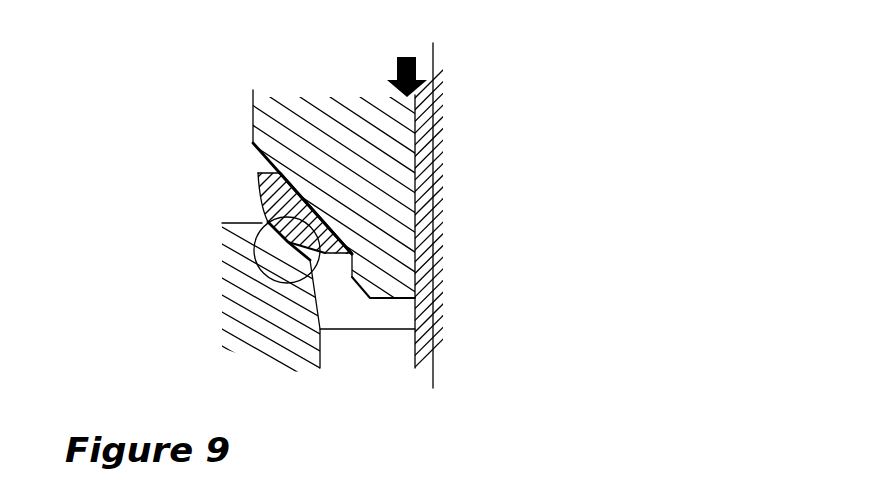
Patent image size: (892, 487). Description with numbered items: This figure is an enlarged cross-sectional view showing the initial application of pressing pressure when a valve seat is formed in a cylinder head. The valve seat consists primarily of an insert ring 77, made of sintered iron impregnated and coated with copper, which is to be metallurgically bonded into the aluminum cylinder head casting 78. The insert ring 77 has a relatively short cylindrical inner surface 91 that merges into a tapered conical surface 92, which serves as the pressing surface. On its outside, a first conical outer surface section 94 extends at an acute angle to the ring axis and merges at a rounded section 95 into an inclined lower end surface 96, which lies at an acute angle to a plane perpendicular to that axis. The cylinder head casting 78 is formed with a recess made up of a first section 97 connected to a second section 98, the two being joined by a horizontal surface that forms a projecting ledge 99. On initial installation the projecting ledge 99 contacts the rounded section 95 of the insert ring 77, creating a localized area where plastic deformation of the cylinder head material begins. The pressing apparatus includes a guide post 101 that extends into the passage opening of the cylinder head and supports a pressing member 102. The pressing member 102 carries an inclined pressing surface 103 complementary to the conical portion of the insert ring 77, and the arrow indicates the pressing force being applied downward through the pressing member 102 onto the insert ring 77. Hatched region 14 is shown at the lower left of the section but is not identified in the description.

The guide post 101 is at (436, 102).
The pressing member 102 is at (262, 123).
The inclined pressing surface 103 is at (258, 155).
The tapered conical surface 92 is at (287, 190).
The first section 97 is at (286, 205).
The insert ring 77 is at (258, 173).
The first conical outer surface section 94 is at (262, 200).
The inclined lower end surface 96 is at (313, 257).
The second section 98 is at (312, 229).
The projecting ledge 99 is at (315, 222).
The cylindrical inner surface 91 is at (352, 258).
The base member 14 is at (300, 282).
The cylinder head casting 78 is at (266, 338).
The rounded section 95 is at (250, 261).